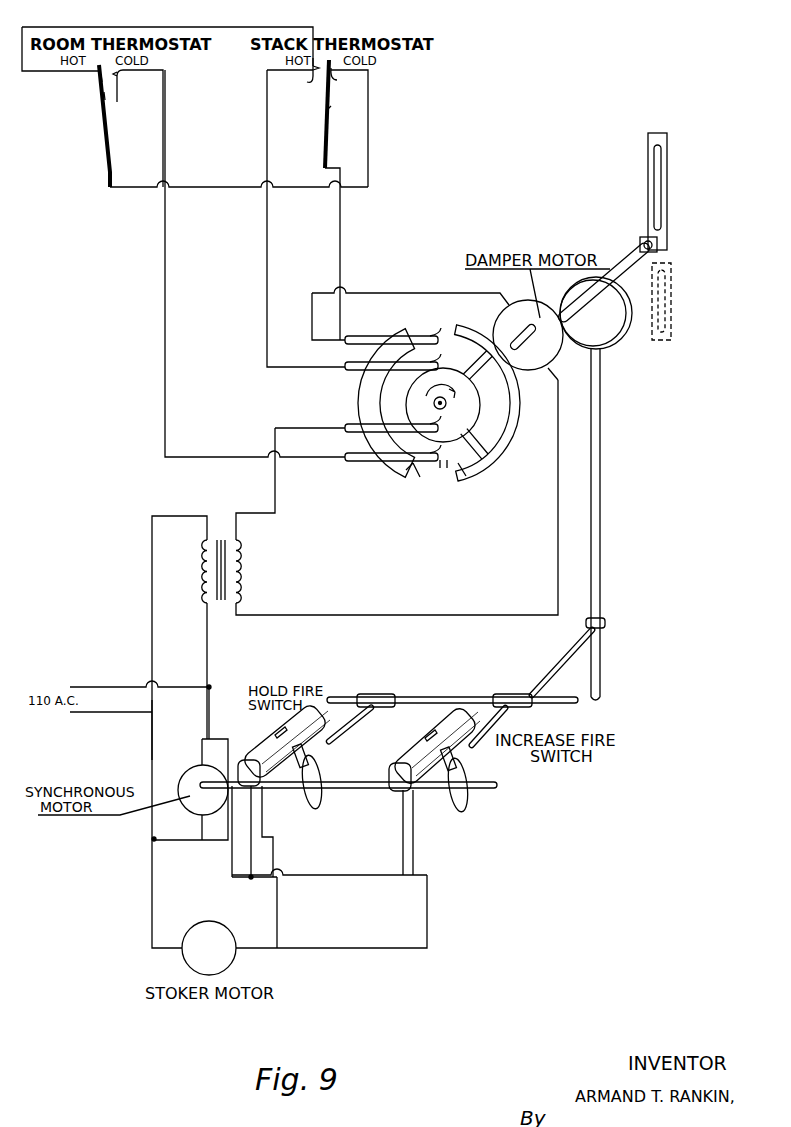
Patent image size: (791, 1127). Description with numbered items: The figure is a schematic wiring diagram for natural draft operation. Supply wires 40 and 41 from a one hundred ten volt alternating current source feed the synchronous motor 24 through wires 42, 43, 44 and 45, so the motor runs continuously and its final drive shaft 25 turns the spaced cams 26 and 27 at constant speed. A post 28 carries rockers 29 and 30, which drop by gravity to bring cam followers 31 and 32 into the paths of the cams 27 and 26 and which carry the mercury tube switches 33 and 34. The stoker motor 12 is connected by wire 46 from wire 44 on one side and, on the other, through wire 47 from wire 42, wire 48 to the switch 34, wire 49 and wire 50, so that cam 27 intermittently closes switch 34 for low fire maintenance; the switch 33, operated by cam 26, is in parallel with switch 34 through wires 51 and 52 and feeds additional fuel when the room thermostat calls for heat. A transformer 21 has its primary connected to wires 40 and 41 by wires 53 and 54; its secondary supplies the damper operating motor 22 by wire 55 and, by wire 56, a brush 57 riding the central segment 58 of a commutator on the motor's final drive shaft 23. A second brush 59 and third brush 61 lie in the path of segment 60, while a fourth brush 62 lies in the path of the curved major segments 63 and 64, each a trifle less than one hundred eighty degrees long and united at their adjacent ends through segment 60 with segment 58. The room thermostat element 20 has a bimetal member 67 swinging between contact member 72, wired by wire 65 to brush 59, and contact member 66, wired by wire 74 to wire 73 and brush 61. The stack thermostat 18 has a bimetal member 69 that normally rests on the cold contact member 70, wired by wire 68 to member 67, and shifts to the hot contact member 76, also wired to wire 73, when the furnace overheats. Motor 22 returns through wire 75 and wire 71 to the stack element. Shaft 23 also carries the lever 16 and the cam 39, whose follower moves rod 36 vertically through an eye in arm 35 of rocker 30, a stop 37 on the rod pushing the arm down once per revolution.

The stoker motor 12 is at (232, 966).
The lever 16 is at (667, 222).
The stack bimetal member 18 is at (329, 129).
The room thermostat element 20 is at (110, 134).
The transformer 21 is at (244, 585).
The damper operating motor 22 is at (528, 300).
The final drive shaft 23 is at (570, 297).
The synchronous motor 24 is at (196, 812).
The final drive shaft 25 is at (350, 790).
The cam 26 is at (460, 812).
The cam 27 is at (318, 806).
The post 28 is at (437, 697).
The rocker 29 is at (338, 735).
The rocker 30 is at (498, 716).
The cam follower 31 is at (312, 762).
The cam follower 32 is at (458, 762).
The mercury tube switch 33 is at (412, 758).
The mercury tube switch 34 is at (272, 752).
The arm 35 is at (545, 668).
The rod 36 is at (600, 572).
The stop 37 is at (605, 620).
The cam 39 is at (605, 345).
The wire 40 is at (112, 687).
The wire 41 is at (105, 713).
The wire 42 is at (213, 700).
The wire 43 is at (202, 755).
The wire 44 is at (153, 726).
The wire 45 is at (155, 850).
The wire 46 is at (152, 890).
The wire 47 is at (231, 862).
The wire 48 is at (243, 870).
The wire 49 is at (275, 856).
The wire 50 is at (273, 945).
The wire 51 is at (346, 875).
The wire 52 is at (388, 950).
The wire 53 is at (209, 636).
The wire 54 is at (152, 640).
The wire 55 is at (420, 615).
The wire 56 is at (275, 488).
The brush 57 is at (345, 424).
The commutator segment 58 is at (465, 406).
The second brush 59 is at (381, 462).
The commutator segment 60 is at (442, 470).
The third brush 61 is at (345, 369).
The fourth brush 62 is at (370, 336).
The commutator segment 63 is at (408, 478).
The commutator segment 64 is at (460, 478).
The wire 65 is at (165, 316).
The contact member 66 is at (101, 74).
The bimetal member 67 is at (104, 95).
The wire 68 is at (368, 100).
The bimetal member 69 is at (327, 110).
The contact member 70 is at (349, 127).
The wire 71 is at (340, 232).
The contact member 72 is at (138, 128).
The wire 73 is at (267, 124).
The wire 74 is at (213, 24).
The wire 75 is at (430, 292).
The contact member 76 is at (310, 80).